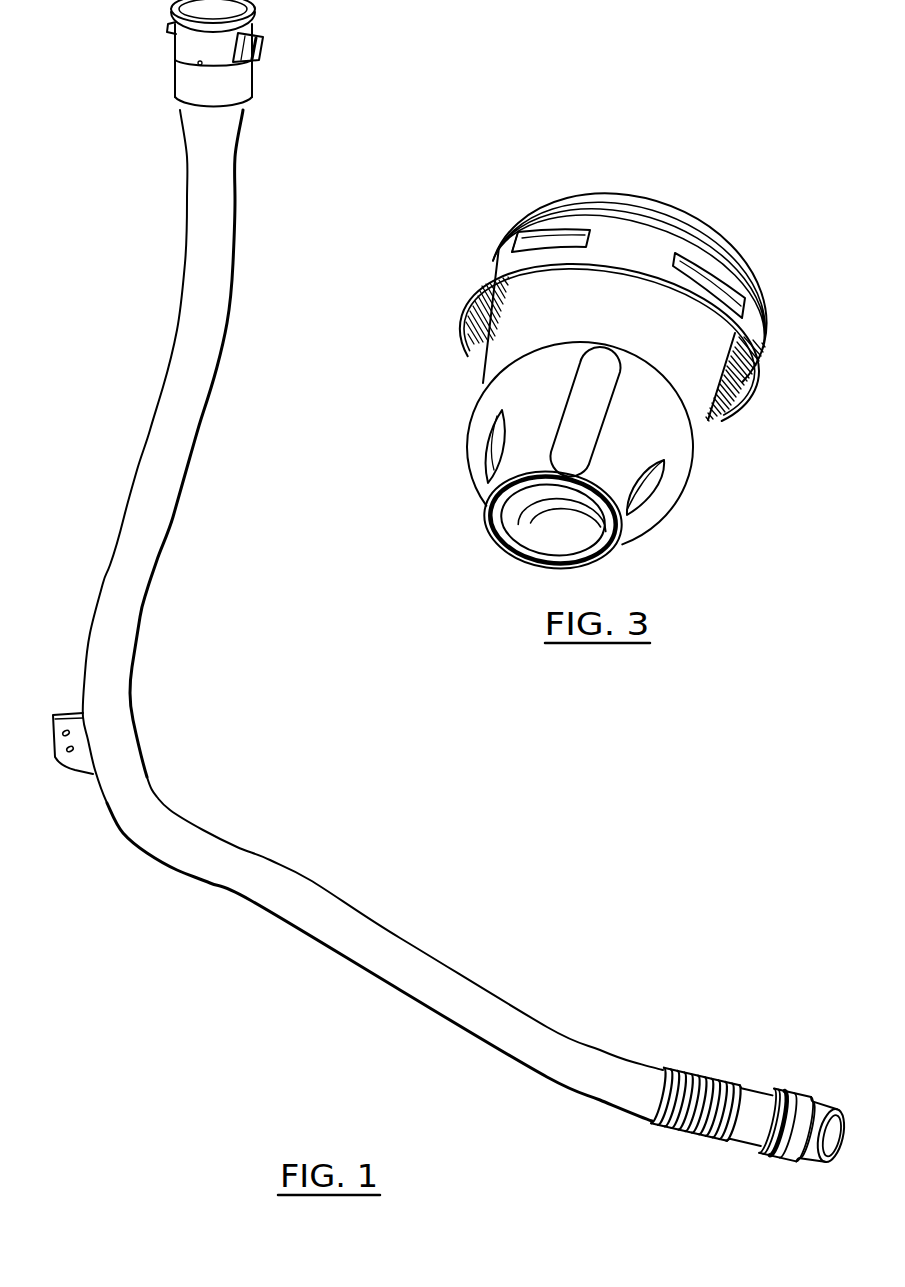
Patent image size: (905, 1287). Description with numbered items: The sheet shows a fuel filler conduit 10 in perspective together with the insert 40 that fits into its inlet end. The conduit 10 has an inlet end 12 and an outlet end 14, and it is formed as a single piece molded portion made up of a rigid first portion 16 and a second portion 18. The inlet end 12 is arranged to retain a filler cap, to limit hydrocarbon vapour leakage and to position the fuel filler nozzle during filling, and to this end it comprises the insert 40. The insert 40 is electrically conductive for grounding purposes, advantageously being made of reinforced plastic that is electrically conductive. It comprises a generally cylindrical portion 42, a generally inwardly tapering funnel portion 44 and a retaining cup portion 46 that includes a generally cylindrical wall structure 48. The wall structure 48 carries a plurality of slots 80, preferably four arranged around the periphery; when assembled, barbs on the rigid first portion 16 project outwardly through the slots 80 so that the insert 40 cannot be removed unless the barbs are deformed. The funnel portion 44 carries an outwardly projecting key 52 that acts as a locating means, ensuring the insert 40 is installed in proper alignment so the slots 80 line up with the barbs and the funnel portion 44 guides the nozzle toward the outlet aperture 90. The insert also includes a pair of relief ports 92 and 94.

In FIG. 1, the fuel filler conduit 10 is at (116, 880).
In FIG. 1, the inlet end 12 is at (172, 80).
In FIG. 1, the outlet end 14 is at (785, 1093).
In FIG. 1, the first portion 16 is at (168, 548).
In FIG. 1, the second portion 18 is at (708, 1080).
In FIG. 3, the insert 40 is at (697, 195).
In FIG. 3, the generally cylindrical portion 42 is at (537, 328).
In FIG. 3, the funnel portion 44 is at (622, 443).
In FIG. 3, the retaining cup portion 46 is at (620, 243).
In FIG. 3, the cylindrical wall structure 48 is at (495, 260).
In FIG. 3, the key 52 is at (567, 420).
In FIG. 3, the slots 80 is at (567, 237).
In FIG. 3, the outlet aperture 90 is at (523, 530).
In FIG. 3, the relief port 92 is at (690, 467).
In FIG. 3, the relief port 94 is at (492, 463).